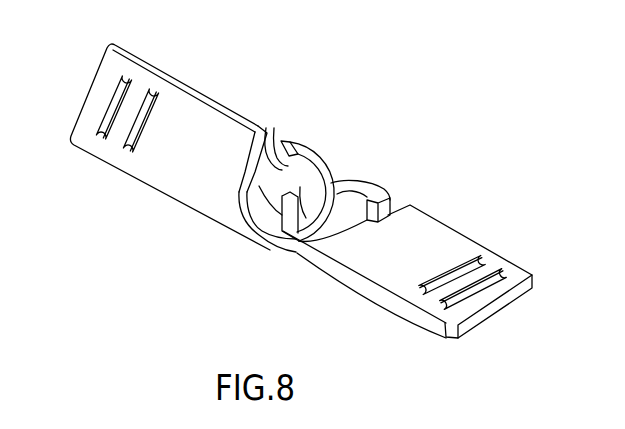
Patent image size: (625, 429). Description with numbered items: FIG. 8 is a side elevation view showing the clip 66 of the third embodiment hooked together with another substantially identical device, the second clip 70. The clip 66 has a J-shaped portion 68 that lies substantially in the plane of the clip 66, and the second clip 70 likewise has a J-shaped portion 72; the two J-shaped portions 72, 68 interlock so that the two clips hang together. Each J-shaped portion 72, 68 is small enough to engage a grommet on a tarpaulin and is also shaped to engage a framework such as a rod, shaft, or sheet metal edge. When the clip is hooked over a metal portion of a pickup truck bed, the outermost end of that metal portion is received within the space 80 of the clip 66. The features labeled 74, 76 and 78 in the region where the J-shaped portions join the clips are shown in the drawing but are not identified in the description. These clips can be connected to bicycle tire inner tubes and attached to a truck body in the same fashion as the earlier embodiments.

The clip 66 is at (160, 191).
The J-shaped portion 68 is at (323, 163).
The second clip 70 is at (355, 279).
The J-shaped portion 72 is at (378, 181).
The connecting arm 74 is at (288, 140).
The loop end 76 is at (397, 197).
The bend portion 78 is at (268, 128).
The space 80 is at (251, 196).